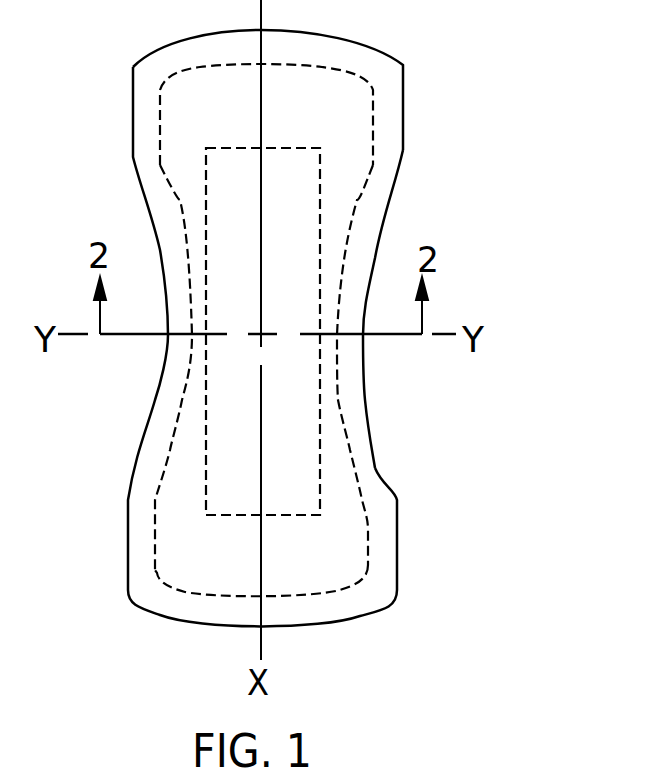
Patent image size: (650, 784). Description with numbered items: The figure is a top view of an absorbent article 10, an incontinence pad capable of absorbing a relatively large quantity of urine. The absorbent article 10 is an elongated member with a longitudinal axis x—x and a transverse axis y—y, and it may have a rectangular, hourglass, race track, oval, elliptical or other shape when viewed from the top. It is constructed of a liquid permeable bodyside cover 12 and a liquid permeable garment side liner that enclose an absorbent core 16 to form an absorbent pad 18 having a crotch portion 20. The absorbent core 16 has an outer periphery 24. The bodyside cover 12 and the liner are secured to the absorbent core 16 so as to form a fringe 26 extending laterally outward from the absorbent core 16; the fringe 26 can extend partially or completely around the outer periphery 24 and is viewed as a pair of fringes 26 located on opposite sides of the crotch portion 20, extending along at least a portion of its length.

The absorbent article 10 is at (466, 62).
The bodyside cover 12 is at (375, 468).
The absorbent core 16 is at (186, 536).
The absorbent pad 18 is at (410, 150).
The crotch portion 20 is at (375, 258).
The outer periphery 24 is at (368, 545).
The fringe 26 is at (350, 375).